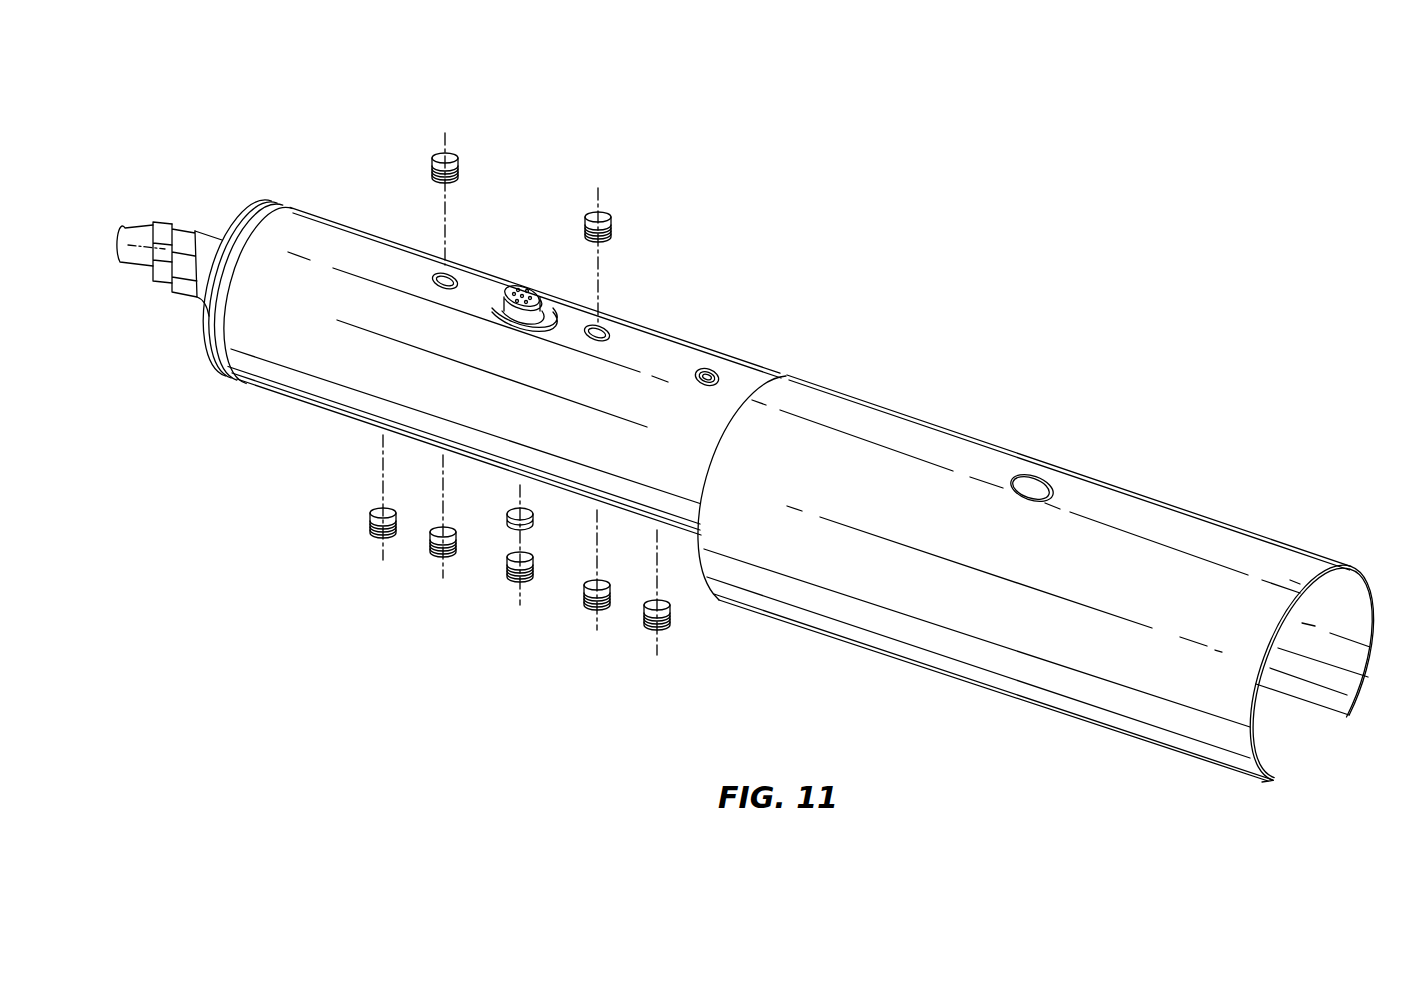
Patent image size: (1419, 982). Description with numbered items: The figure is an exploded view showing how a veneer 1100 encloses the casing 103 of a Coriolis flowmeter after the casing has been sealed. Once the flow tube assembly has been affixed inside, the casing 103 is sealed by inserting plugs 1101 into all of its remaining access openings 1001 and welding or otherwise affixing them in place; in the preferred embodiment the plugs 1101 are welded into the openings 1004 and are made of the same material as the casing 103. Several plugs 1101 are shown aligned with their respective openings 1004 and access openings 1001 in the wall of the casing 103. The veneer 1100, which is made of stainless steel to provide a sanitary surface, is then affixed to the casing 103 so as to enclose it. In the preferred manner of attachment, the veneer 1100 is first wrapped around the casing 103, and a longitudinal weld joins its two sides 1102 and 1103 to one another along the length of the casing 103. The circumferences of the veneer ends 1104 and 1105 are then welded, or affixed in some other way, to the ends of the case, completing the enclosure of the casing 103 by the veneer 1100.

The casing 103 is at (307, 232).
The openings 1004 is at (459, 279).
The plugs 1101 is at (458, 157).
The access openings 1001 is at (432, 553).
The veneer 1100 is at (852, 423).
The side 1102 is at (1273, 782).
The side 1103 is at (1330, 697).
The end 1104 is at (1294, 573).
The end 1105 is at (753, 390).